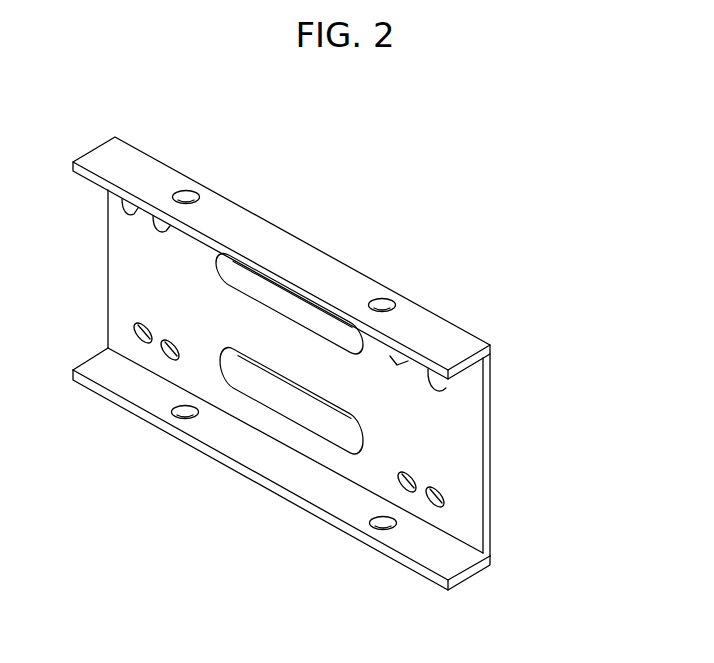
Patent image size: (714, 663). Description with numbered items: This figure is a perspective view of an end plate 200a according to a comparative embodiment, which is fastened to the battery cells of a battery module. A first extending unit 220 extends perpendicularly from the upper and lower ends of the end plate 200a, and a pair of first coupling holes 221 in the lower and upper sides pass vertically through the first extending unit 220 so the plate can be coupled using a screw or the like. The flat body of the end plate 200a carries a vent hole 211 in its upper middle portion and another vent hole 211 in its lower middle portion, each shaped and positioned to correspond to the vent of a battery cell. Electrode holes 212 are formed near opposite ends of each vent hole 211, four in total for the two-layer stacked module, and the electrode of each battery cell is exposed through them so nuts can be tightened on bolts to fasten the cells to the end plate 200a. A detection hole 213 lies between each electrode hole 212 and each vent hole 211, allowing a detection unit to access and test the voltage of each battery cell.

The end plate 200a is at (553, 137).
The vent hole 211 is at (255, 372).
The electrode hole 212 is at (125, 205).
The detection hole 213 is at (158, 217).
The first extending unit 220 is at (288, 243).
The first coupling hole 221 is at (188, 190).